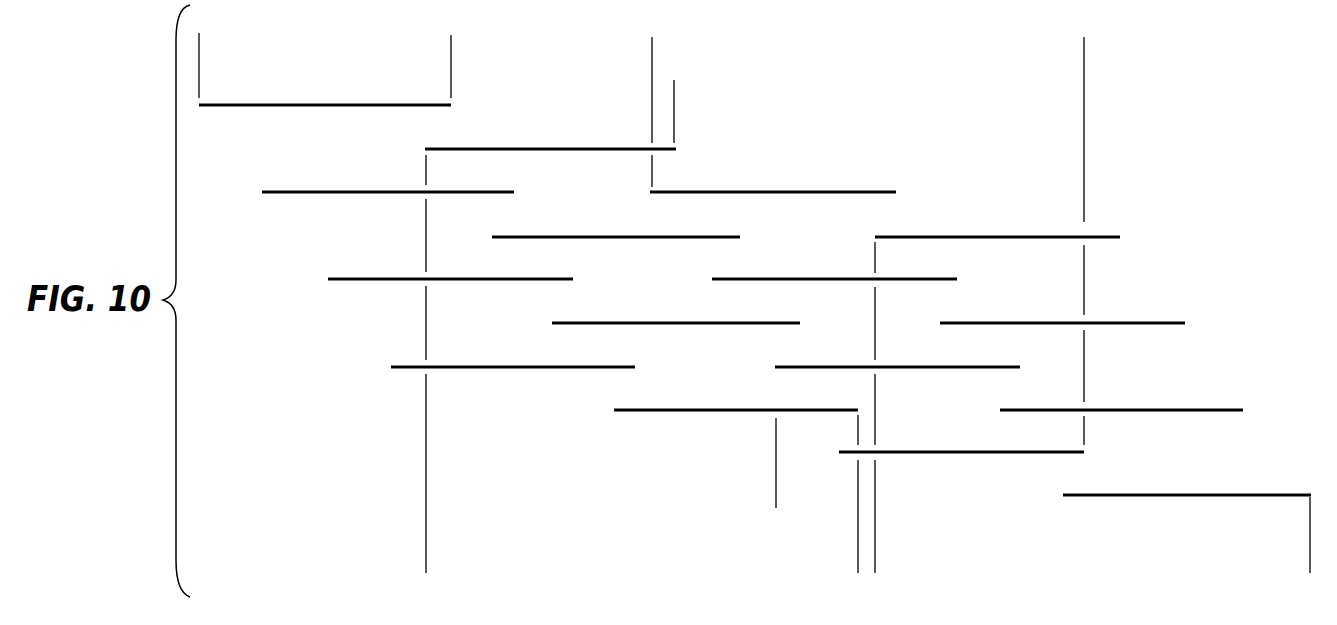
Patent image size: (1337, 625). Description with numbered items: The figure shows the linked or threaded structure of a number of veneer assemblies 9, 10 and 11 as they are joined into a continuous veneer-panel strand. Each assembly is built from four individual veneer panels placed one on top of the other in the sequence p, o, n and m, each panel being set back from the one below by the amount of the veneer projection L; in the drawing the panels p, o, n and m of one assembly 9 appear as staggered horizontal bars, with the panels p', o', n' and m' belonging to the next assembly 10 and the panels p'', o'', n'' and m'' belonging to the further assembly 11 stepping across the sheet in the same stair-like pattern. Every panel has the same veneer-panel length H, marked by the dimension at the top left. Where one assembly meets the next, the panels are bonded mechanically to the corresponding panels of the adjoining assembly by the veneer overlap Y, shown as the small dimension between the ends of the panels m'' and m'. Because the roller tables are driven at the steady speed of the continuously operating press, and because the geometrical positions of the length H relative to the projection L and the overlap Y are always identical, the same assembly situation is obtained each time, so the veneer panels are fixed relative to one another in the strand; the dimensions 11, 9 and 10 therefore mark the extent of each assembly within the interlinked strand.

The veneer assembly 9 is at (876, 568).
The veneer assembly 10 is at (1084, 50).
The veneer assembly 11 is at (426, 568).
The veneer-panel length H is at (451, 50).
The veneer overlap Y is at (731, 105).
The veneer projection L is at (858, 497).
The veneer panel m is at (997, 220).
The veneer panel m' is at (773, 174).
The veneer panel m'' is at (550, 131).
The veneer panel n is at (1062, 306).
The veneer panel n' is at (834, 262).
The veneer panel n'' is at (616, 220).
The veneer panel o is at (1121, 390).
The veneer panel o' is at (897, 351).
The veneer panel o'' is at (676, 306).
The veneer panel p is at (1187, 476).
The veneer panel p' is at (961, 433).
The veneer panel p'' is at (736, 390).